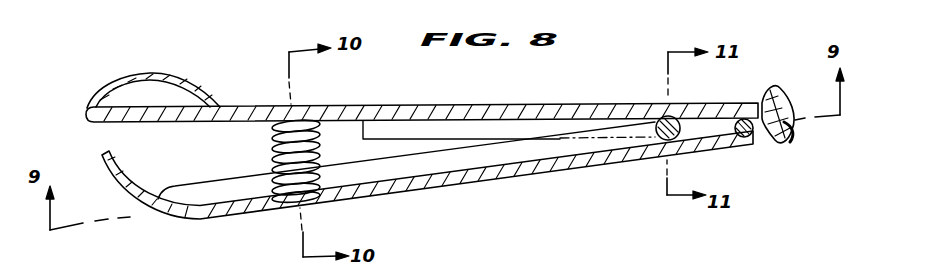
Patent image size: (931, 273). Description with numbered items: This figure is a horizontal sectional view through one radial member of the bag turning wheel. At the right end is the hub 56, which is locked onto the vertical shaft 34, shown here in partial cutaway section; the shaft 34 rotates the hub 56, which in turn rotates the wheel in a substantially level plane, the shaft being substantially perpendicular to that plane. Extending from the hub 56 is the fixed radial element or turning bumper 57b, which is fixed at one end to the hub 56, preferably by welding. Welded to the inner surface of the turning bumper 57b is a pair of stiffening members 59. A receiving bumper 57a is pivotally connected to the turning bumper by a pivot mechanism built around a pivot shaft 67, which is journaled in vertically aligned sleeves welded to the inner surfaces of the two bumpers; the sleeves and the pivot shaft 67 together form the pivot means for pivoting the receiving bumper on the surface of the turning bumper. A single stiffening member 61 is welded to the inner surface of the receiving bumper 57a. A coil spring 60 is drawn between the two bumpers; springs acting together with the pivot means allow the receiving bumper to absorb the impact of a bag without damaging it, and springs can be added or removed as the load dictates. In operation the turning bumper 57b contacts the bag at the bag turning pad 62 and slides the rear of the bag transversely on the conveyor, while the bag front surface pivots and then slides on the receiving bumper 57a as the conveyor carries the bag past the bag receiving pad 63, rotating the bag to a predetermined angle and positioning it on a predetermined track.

The vertical shaft 34 is at (795, 125).
The hub 56 is at (768, 95).
The receiving bumper 57a is at (399, 192).
The turning bumper 57b is at (512, 105).
The stiffening members 59 is at (509, 131).
The spring 60 is at (271, 157).
The stiffening member 61 is at (406, 160).
The bag turning pad 62 is at (210, 63).
The bag receiving pad 63 is at (233, 218).
The pivot shaft 67 is at (666, 142).